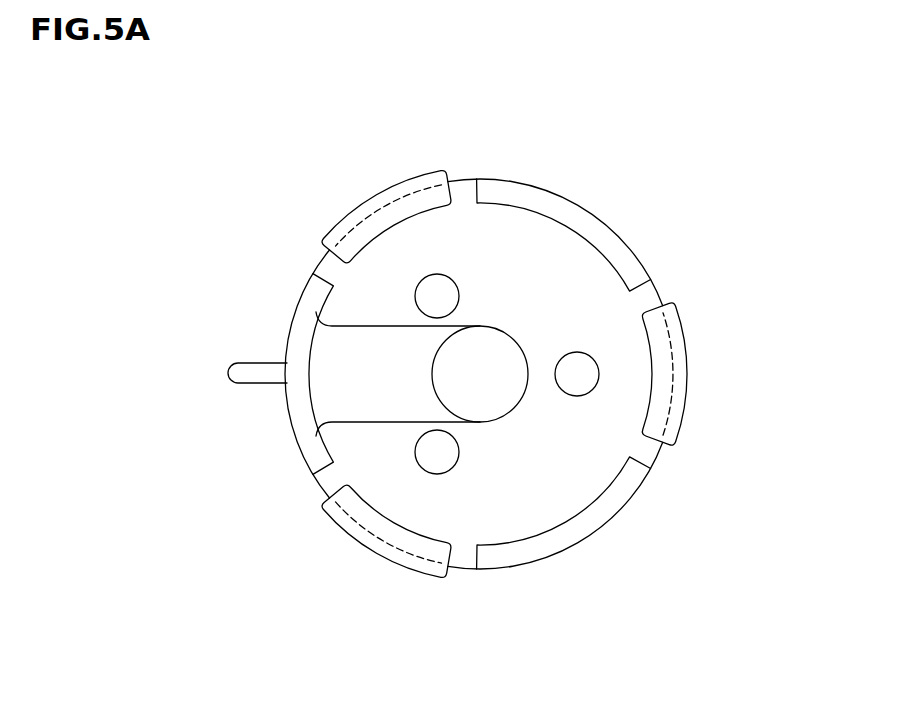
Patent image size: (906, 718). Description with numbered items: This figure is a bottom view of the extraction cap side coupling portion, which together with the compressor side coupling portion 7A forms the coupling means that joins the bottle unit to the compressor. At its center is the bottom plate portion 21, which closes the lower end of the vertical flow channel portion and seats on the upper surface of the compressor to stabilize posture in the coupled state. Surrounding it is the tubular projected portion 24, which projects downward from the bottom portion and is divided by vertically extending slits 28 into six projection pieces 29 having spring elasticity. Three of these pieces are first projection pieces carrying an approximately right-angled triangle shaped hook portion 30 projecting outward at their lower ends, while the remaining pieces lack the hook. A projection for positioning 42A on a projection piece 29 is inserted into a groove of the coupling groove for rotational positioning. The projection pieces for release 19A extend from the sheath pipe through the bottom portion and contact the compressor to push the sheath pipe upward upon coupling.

The compressor side coupling portion 7A is at (647, 213).
The tubular projected portion 24 is at (680, 273).
The slit 28 is at (467, 203).
The projection pieces 29 is at (383, 192).
The hook portion 30 is at (353, 213).
The projection for positioning 42A is at (260, 383).
The projection pieces for release 19A is at (580, 375).
The bottom plate portion 21 is at (492, 382).